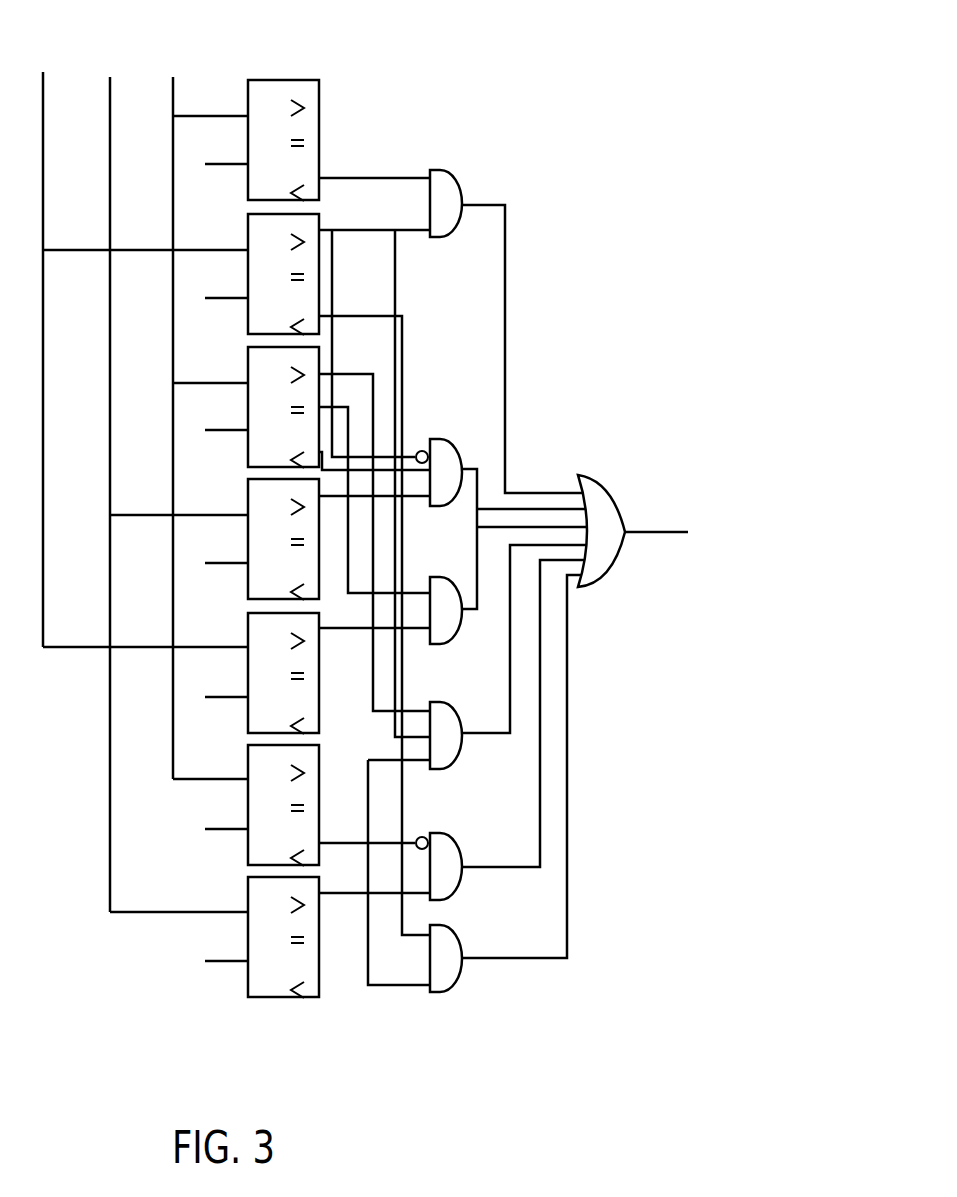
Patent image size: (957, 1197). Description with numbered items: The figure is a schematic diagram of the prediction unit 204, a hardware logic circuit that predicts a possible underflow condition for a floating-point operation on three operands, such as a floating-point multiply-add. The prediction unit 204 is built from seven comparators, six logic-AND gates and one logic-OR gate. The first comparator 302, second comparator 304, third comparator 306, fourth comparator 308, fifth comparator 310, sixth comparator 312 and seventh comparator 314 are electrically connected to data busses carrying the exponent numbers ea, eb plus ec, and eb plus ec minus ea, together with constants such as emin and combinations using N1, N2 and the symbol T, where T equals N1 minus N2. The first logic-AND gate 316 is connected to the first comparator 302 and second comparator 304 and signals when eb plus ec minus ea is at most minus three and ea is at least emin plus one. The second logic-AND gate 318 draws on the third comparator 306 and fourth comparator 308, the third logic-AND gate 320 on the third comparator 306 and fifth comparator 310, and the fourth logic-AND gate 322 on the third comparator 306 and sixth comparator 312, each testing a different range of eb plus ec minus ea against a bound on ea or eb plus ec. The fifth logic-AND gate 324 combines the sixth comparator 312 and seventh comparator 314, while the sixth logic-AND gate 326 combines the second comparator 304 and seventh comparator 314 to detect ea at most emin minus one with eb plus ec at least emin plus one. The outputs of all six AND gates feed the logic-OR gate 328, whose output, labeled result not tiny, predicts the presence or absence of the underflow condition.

The prediction unit 204 is at (405, 50).
The first comparator 302 is at (248, 185).
The second comparator 304 is at (248, 319).
The third comparator 306 is at (248, 452).
The fourth comparator 308 is at (248, 584).
The fifth comparator 310 is at (248, 718).
The sixth comparator 312 is at (248, 850).
The seventh comparator 314 is at (248, 982).
The first logic-AND gate 316 is at (443, 170).
The second logic-AND gate 318 is at (443, 435).
The third logic-AND gate 320 is at (443, 570).
The fourth logic-AND gate 322 is at (443, 698).
The fifth logic-AND gate 324 is at (443, 830).
The sixth logic-AND gate 326 is at (462, 933).
The logic-OR gate 328 is at (605, 485).